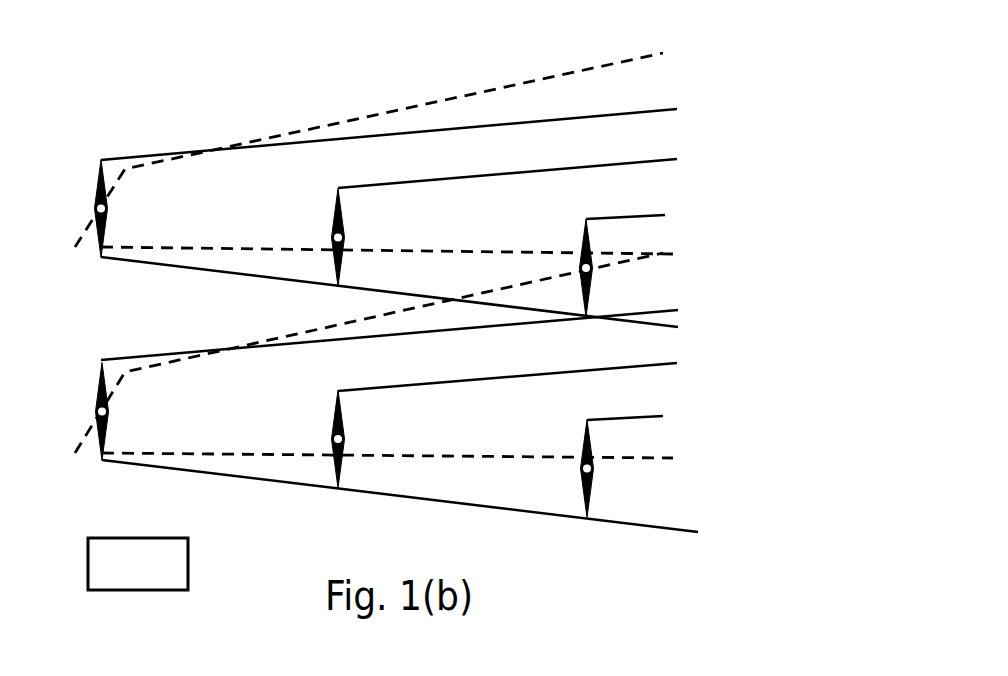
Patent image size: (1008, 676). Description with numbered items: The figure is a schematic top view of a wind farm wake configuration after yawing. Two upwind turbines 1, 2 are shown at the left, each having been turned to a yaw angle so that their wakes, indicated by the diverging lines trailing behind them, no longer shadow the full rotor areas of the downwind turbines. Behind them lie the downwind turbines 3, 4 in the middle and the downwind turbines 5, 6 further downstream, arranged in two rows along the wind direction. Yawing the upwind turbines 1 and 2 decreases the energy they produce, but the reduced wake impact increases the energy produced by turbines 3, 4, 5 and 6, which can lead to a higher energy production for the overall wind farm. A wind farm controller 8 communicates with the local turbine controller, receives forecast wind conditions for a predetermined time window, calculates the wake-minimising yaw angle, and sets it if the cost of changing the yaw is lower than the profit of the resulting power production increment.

The turbine 1 is at (65, 209).
The turbine 2 is at (65, 412).
The turbine 3 is at (306, 238).
The turbine 4 is at (306, 439).
The turbine 5 is at (553, 258).
The turbine 6 is at (554, 456).
The wind farm controller 8 is at (88, 563).